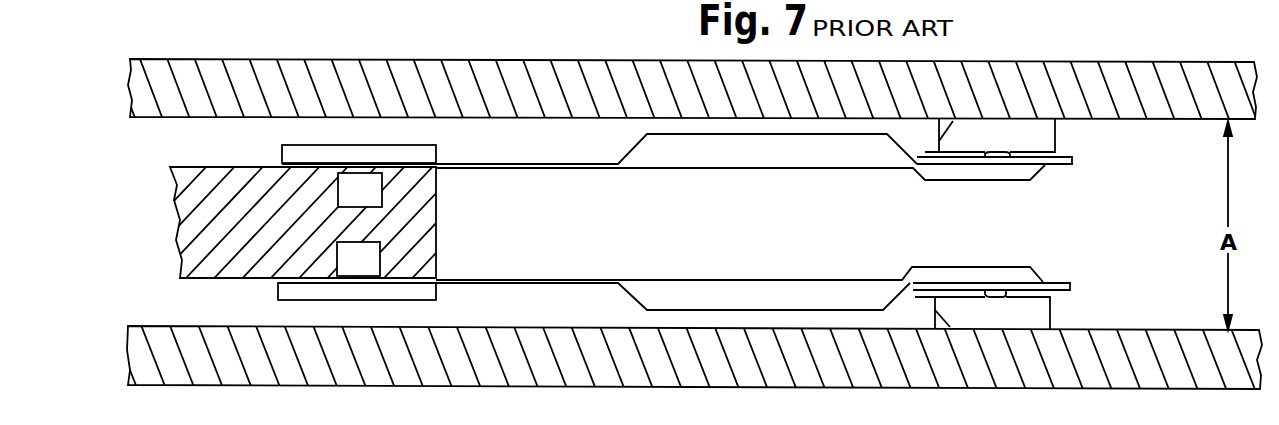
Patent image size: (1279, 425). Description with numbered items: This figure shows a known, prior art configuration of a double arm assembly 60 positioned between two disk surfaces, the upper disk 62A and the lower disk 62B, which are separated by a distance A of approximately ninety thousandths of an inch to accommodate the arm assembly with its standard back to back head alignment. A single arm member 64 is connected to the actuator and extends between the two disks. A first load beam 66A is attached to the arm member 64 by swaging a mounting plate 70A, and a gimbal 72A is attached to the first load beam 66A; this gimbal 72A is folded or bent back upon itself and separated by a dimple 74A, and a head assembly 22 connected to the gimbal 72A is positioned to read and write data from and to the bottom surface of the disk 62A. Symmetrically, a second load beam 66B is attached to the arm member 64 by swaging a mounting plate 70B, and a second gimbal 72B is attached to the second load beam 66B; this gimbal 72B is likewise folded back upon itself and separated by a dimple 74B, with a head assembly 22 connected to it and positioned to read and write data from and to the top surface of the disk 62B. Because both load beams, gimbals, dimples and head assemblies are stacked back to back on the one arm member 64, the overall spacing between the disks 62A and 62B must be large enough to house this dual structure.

The double arm assembly 60 is at (463, 44).
The disk 62A is at (218, 60).
The disk 62B is at (255, 386).
The arm member 64 is at (185, 279).
The first load beam 66A is at (502, 164).
The second load beam 66B is at (580, 283).
The mounting plate 70A is at (312, 145).
The mounting plate 70B is at (373, 300).
The gimbal 72A is at (1067, 152).
The second gimbal 72B is at (1063, 297).
The dimple 74A is at (1010, 157).
The dimple 74B is at (1006, 292).
The head assembly 22 is at (973, 135).